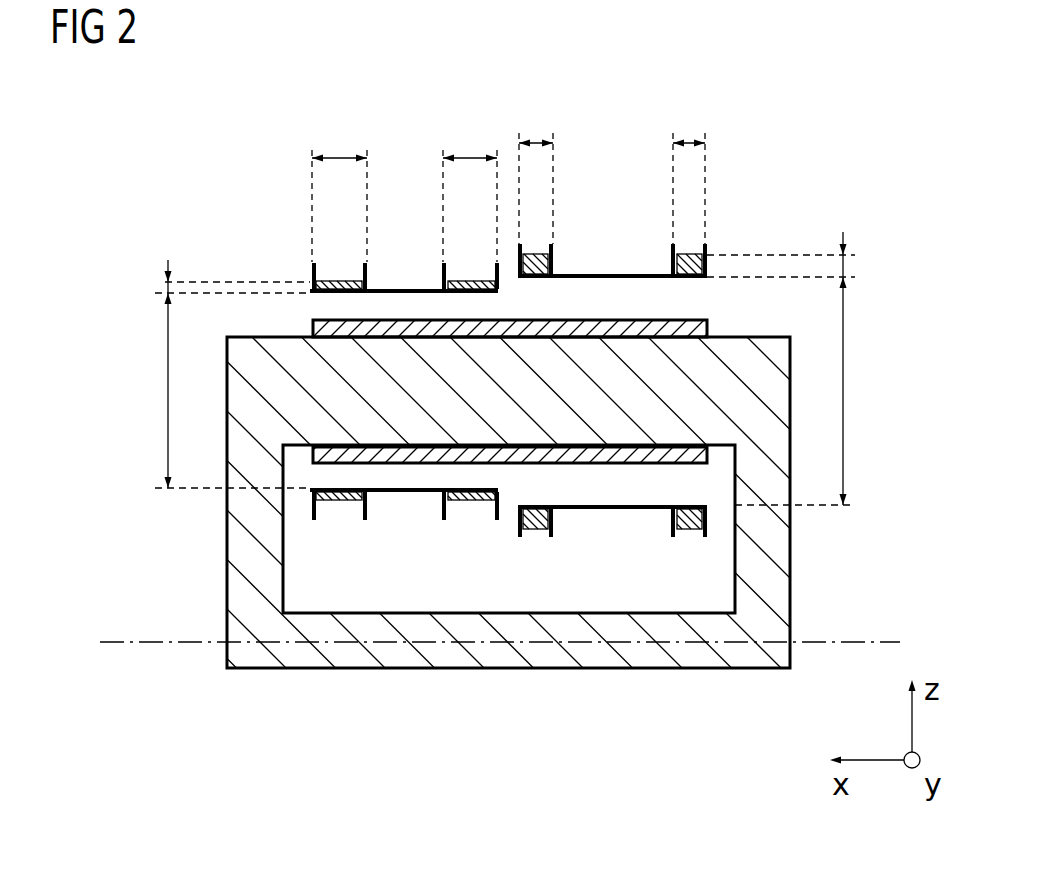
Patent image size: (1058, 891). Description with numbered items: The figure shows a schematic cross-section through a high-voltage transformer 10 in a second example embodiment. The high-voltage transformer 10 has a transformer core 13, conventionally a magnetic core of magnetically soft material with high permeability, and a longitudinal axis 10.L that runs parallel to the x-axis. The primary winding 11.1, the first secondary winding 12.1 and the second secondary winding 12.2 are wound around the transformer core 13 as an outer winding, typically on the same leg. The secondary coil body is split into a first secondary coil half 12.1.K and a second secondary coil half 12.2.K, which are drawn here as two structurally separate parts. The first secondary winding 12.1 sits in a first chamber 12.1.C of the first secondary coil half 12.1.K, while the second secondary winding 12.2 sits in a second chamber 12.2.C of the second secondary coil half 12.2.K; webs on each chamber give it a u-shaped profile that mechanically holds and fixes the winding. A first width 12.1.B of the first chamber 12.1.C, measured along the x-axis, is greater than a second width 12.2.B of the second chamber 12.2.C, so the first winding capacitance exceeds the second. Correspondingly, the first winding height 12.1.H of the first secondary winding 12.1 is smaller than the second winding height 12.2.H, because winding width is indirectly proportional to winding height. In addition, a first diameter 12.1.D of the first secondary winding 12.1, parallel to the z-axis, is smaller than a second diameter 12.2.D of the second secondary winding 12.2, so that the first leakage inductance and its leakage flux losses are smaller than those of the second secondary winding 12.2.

The high-voltage transformer 10 is at (197, 130).
The longitudinal axis 10.L is at (888, 641).
The transformer core 13 is at (303, 658).
The primary winding 11.1 is at (707, 325).
The first secondary winding 12.1 is at (330, 282).
The first secondary coil half 12.1.K is at (405, 290).
The first chamber 12.1.C is at (312, 270).
The first width 12.1.B is at (340, 157).
The first winding height 12.1.H is at (165, 289).
The first diameter 12.1.D is at (167, 398).
The second secondary winding 12.2 is at (547, 252).
The second secondary coil half 12.2.K is at (622, 273).
The second chamber 12.2.C is at (706, 250).
The second width 12.2.B is at (535, 141).
The second winding height 12.2.H is at (846, 268).
The second diameter 12.2.D is at (845, 378).